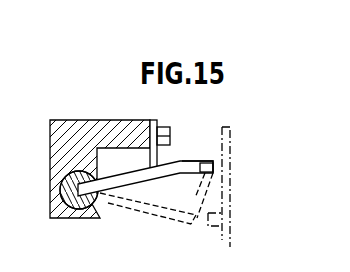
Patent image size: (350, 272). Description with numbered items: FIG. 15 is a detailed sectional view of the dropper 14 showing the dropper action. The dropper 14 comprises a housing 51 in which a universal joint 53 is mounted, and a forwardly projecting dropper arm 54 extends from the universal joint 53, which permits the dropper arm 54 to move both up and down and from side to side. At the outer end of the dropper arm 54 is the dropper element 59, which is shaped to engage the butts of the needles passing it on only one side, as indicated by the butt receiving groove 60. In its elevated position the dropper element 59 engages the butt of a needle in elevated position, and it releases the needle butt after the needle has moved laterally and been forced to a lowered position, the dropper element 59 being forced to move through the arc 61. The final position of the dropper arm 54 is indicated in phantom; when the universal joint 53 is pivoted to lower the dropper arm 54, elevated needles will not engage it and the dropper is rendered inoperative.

The dropper 14 is at (116, 169).
The housing 51 is at (55, 146).
The universal joint 53 is at (68, 177).
The dropper arm 54 is at (150, 170).
The dropper element 59 is at (212, 160).
The butt receiving groove 60 is at (200, 172).
The arc 61 is at (198, 203).